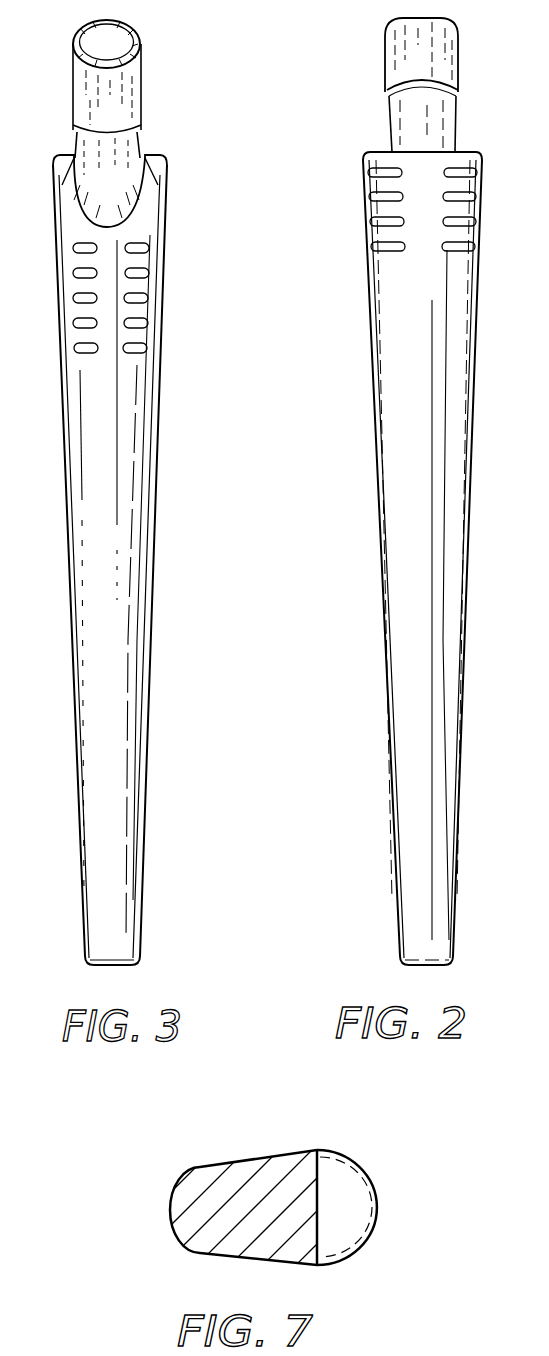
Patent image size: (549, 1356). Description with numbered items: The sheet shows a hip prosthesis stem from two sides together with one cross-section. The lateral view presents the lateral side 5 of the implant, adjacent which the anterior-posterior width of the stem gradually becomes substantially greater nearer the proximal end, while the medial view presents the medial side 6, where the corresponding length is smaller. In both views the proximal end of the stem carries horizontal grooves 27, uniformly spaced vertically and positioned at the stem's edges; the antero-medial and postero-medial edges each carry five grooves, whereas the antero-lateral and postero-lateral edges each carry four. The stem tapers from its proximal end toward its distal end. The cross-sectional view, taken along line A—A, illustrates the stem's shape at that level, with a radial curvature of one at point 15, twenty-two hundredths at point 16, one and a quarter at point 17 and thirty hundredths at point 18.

In FIG. 2, the lateral side 5 is at (398, 530).
In FIG. 3, the medial side 6 is at (113, 540).
In FIG. 3, the horizontal grooves 27 is at (147, 273).
In FIG. 2, the horizontal grooves 27 is at (372, 223).
In FIG. 7, the point 15 is at (377, 1213).
In FIG. 7, the point 16 is at (380, 1137).
In FIG. 7, the point 17 is at (318, 1150).
In FIG. 7, the point 18 is at (177, 1237).